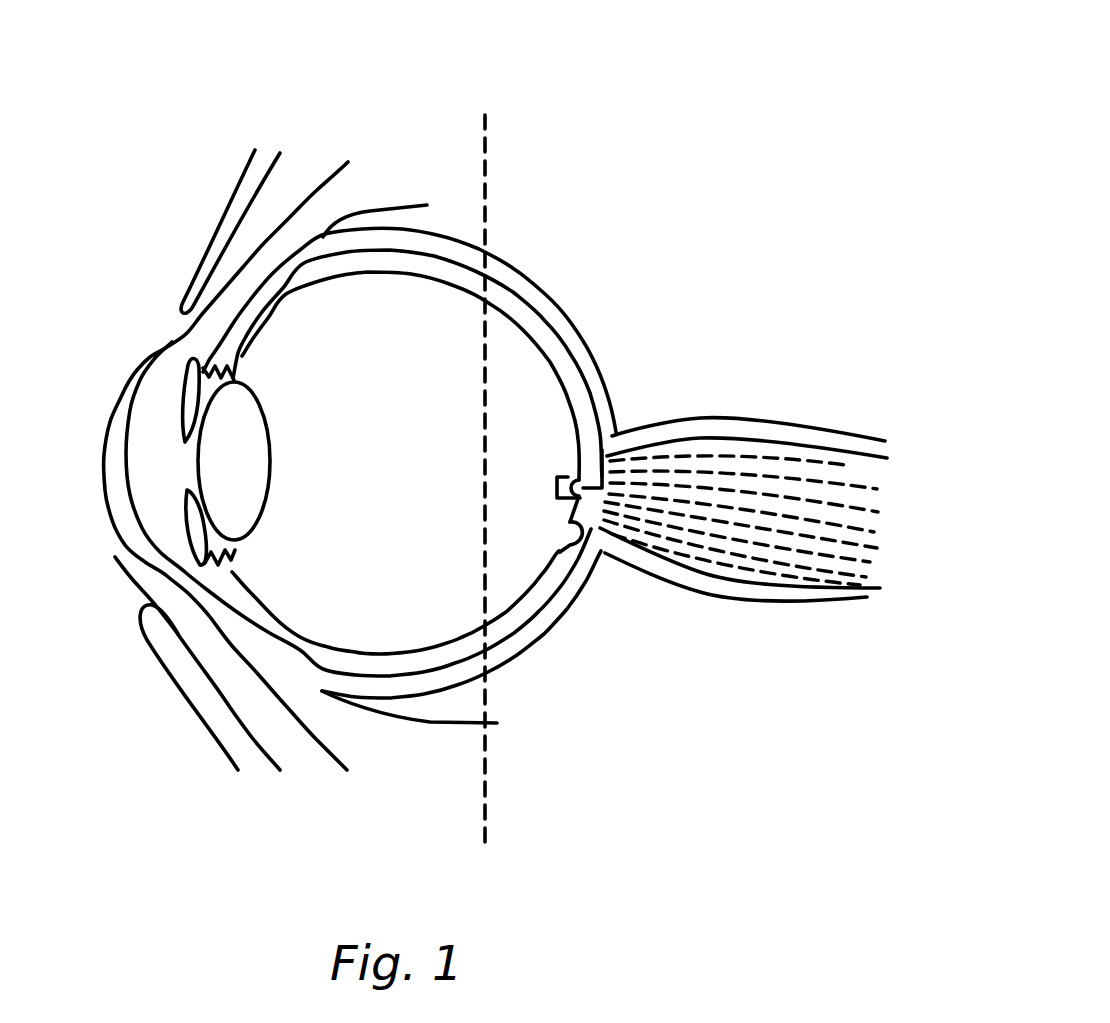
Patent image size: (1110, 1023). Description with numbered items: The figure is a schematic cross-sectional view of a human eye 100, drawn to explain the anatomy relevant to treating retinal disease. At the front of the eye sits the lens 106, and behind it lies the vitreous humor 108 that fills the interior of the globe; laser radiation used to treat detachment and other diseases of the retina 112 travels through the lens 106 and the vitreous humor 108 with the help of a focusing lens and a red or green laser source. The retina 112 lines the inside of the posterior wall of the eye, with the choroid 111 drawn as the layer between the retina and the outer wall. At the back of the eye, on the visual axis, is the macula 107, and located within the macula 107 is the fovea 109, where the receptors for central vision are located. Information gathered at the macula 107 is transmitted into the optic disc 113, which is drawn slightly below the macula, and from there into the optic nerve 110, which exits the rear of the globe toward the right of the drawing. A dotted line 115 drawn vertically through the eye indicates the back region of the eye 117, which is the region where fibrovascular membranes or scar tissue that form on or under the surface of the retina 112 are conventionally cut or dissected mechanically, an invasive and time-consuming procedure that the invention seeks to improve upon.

The human eye 100 is at (176, 140).
The lens 106 is at (240, 436).
The macula 107 is at (560, 485).
The vitreous humor 108 is at (310, 582).
The fovea 109 is at (603, 452).
The optic nerve 110 is at (790, 440).
The choroid 111 is at (533, 600).
The retina 112 is at (472, 637).
The optic disc 113 is at (562, 533).
The dotted line 115 is at (484, 808).
The back region of the eye 117 is at (734, 192).